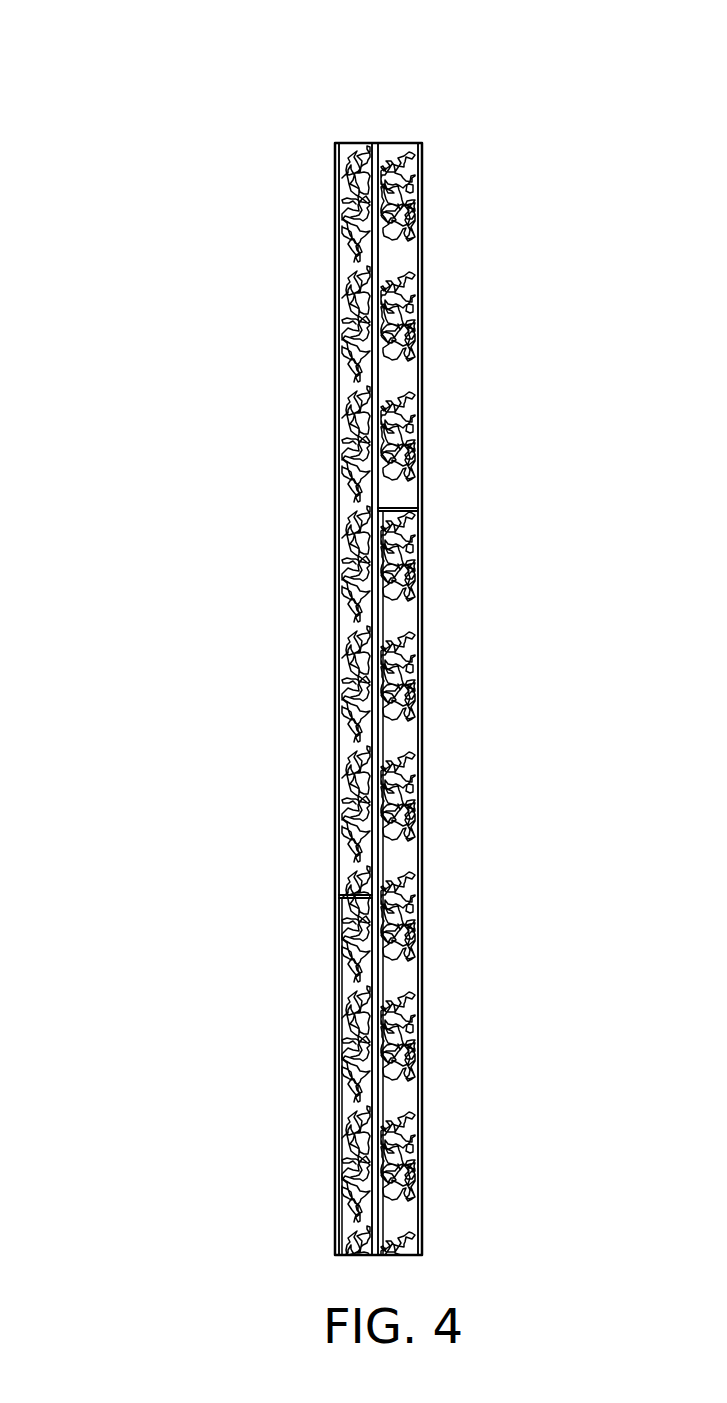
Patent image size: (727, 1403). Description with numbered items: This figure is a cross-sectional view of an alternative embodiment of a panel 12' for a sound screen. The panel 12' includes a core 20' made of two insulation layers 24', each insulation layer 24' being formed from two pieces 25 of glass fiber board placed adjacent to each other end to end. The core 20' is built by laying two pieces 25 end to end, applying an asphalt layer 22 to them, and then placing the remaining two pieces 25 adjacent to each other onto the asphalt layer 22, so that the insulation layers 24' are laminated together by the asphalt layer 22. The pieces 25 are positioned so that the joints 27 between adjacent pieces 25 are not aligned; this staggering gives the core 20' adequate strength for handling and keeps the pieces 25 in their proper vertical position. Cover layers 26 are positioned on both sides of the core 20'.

The panel 12' is at (336, 629).
The core 20' is at (370, 629).
The asphalt layer 22 is at (375, 297).
The insulation layer 24' is at (370, 699).
The pieces of glass fiber board 25 is at (405, 350).
The cover layers 26 is at (334, 277).
The joints 27 is at (405, 500).